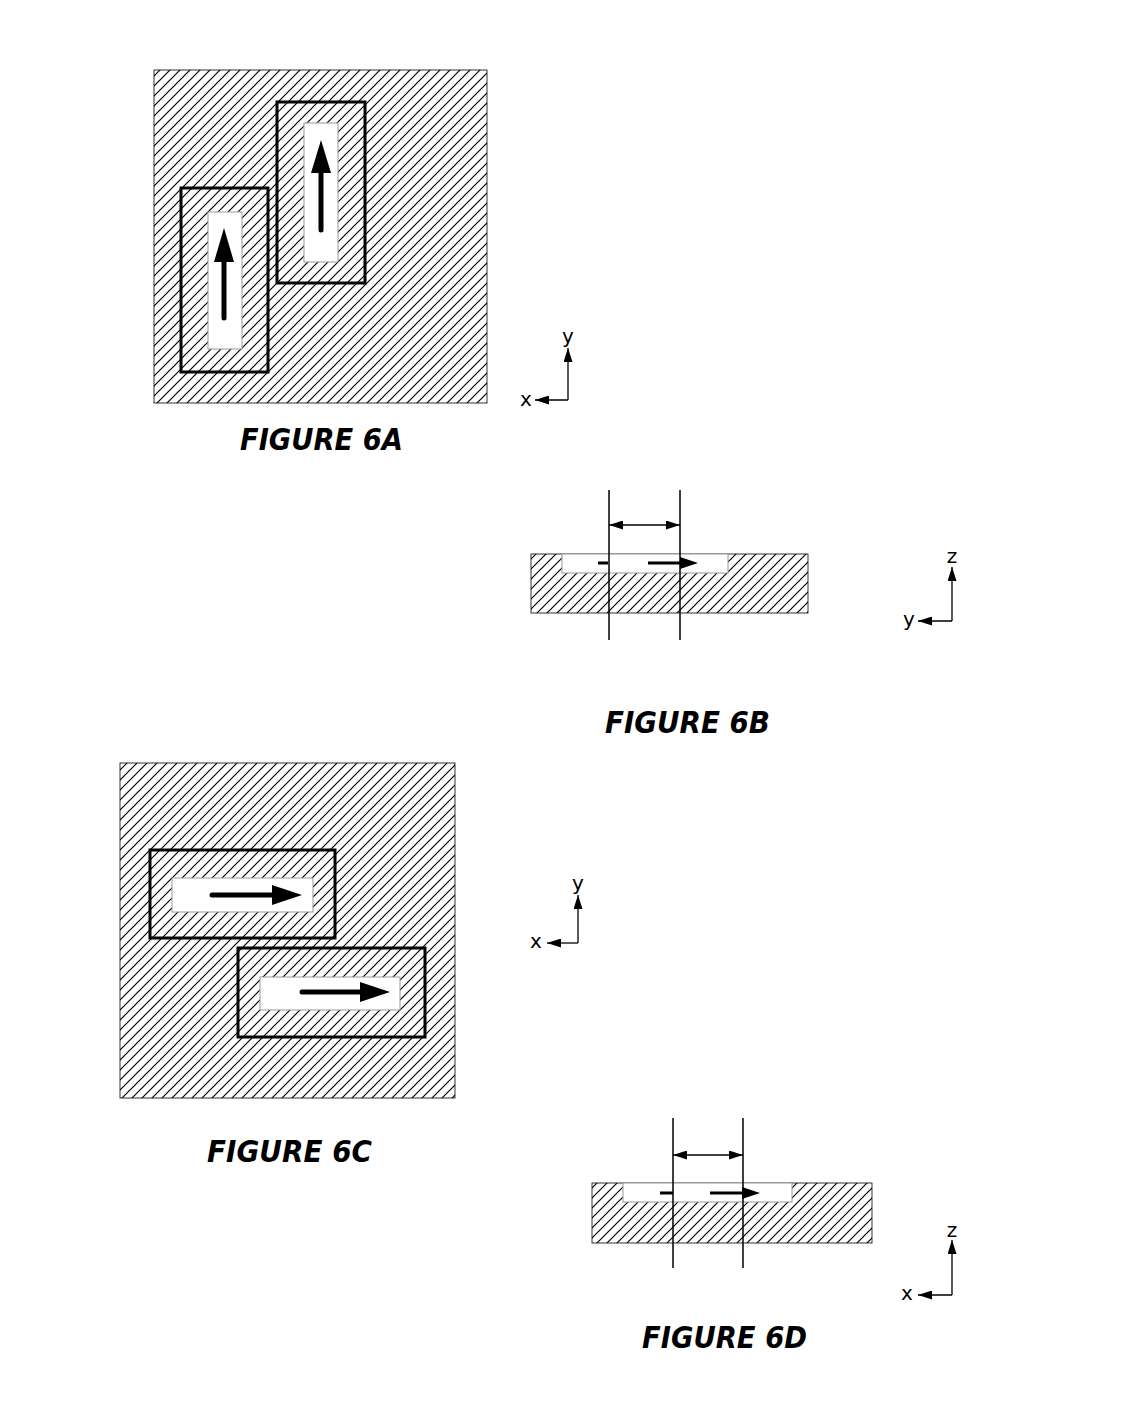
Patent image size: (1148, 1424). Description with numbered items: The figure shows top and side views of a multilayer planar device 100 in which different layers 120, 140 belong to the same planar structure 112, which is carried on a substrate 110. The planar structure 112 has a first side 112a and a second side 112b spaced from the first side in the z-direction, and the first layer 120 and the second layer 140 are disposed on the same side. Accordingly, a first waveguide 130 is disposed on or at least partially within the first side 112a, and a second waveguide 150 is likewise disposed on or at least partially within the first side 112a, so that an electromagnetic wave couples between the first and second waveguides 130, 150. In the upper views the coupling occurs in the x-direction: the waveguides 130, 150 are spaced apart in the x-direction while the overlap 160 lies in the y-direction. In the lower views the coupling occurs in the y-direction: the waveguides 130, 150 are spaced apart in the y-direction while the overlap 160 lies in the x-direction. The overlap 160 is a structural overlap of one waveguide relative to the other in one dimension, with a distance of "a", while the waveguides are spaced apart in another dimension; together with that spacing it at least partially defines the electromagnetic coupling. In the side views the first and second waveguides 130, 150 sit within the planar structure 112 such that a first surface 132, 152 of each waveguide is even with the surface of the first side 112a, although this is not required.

In FIG. 6A, the device 100 is at (370, 208).
In FIG. 6B, the device 100 is at (685, 521).
In FIG. 6C, the device 100 is at (294, 867).
In FIG. 6D, the device 100 is at (726, 1141).
In FIG. 6B, the substrate 110 is at (685, 582).
In FIG. 6D, the substrate 110 is at (726, 1195).
In FIG. 6A, the planar structure 112 is at (488, 155).
In FIG. 6B, the planar structure 112 is at (773, 593).
In FIG. 6C, the planar structure 112 is at (456, 886).
In FIG. 6D, the planar structure 112 is at (875, 1215).
In FIG. 6A, the first side 112a is at (410, 97).
In FIG. 6B, the first side 112a is at (793, 552).
In FIG. 6C, the first side 112a is at (403, 795).
In FIG. 6A, the second layer portion 112b is at (522, 25).
In FIG. 6B, the second layer portion 112b is at (782, 617).
In FIG. 6C, the second layer portion 112b is at (520, 720).
In FIG. 6A, the first layer 120 is at (188, 244).
In FIG. 6B, the first layer 120 is at (587, 532).
In FIG. 6C, the first layer 120 is at (313, 867).
In FIG. 6D, the first layer 120 is at (652, 1162).
In FIG. 6A, the first waveguide 130 is at (230, 333).
In FIG. 6B, the first waveguide 130 is at (580, 568).
In FIG. 6C, the first waveguide 130 is at (197, 893).
In FIG. 6D, the first waveguide 130 is at (643, 1195).
In FIG. 6B, the first surface 132 is at (577, 552).
In FIG. 6D, the first surface 132 is at (637, 1183).
In FIG. 6A, the second layer 140 is at (289, 156).
In FIG. 6B, the second layer 140 is at (713, 537).
In FIG. 6C, the second layer 140 is at (397, 1023).
In FIG. 6D, the second layer 140 is at (775, 1165).
In FIG. 6A, the second waveguide 150 is at (313, 247).
In FIG. 6B, the second waveguide 150 is at (718, 568).
In FIG. 6C, the second waveguide 150 is at (267, 993).
In FIG. 6D, the second waveguide 150 is at (780, 1195).
In FIG. 6B, the first surface 152 is at (723, 553).
In FIG. 6D, the first surface 152 is at (787, 1183).
In FIG. 6B, the overlap 160 is at (680, 483).
In FIG. 6D, the overlap 160 is at (743, 1111).